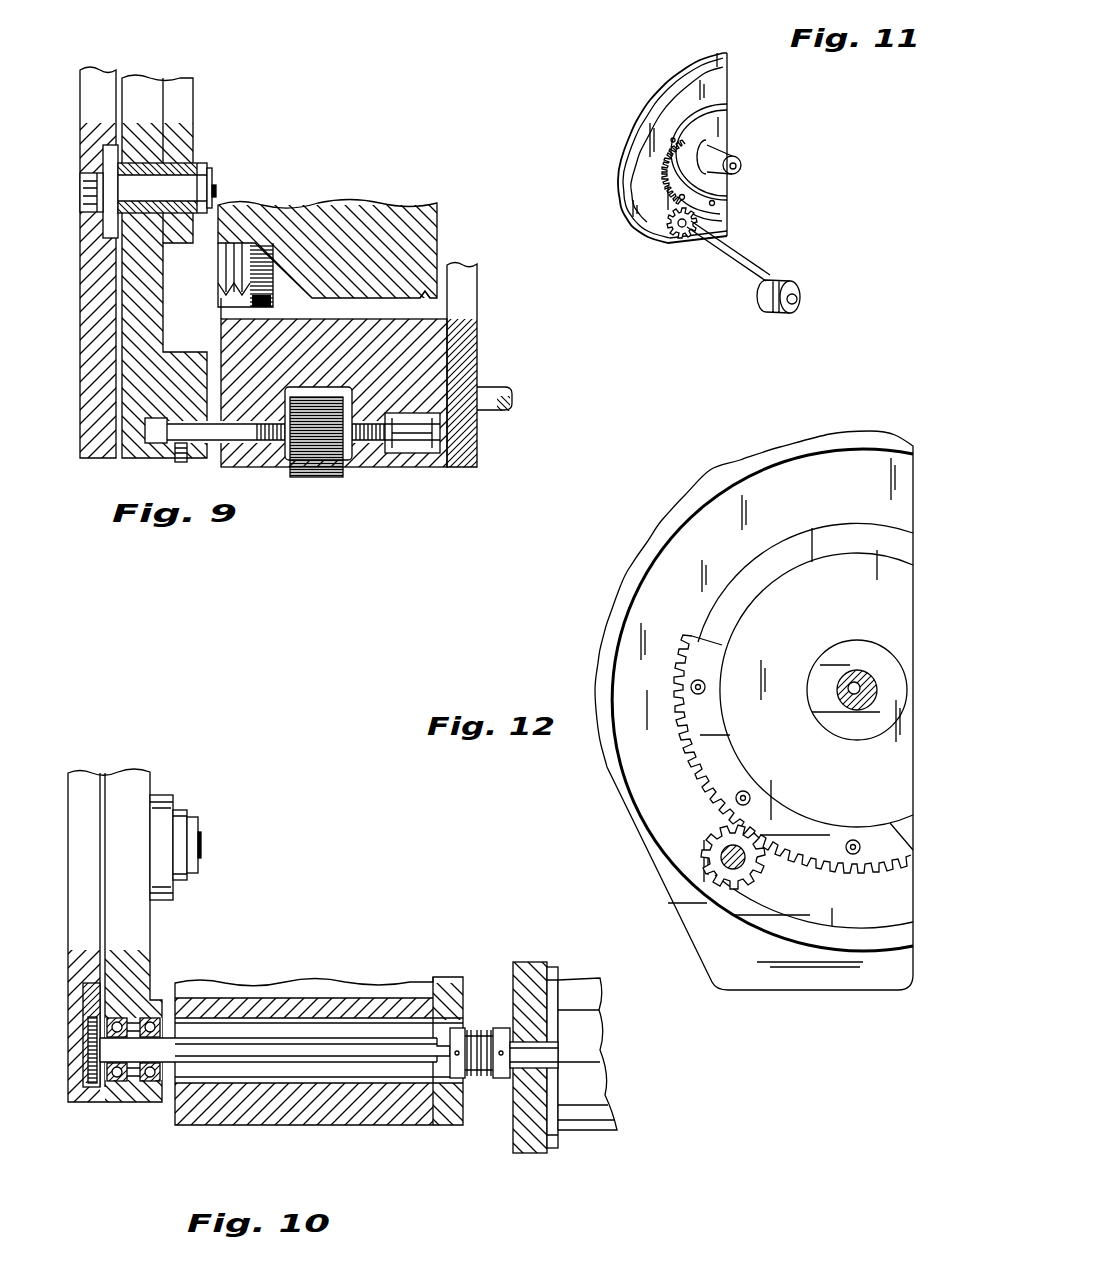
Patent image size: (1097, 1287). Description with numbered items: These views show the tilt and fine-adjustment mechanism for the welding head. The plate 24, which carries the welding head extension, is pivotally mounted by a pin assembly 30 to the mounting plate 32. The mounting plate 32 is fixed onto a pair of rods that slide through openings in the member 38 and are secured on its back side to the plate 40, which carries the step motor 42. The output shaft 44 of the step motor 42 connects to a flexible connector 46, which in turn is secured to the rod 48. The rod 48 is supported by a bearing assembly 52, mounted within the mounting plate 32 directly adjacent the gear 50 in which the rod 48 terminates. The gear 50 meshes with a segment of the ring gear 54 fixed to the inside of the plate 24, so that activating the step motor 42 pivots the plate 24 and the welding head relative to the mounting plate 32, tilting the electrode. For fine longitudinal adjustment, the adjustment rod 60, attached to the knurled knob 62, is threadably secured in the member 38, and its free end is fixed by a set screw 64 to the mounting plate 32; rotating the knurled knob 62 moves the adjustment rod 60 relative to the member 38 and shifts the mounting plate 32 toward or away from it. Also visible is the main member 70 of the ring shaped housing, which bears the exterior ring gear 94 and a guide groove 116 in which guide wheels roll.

In FIG. 9, the plate 24 is at (93, 381).
In FIG. 11, the plate 24 is at (665, 85).
In FIG. 12, the plate 24 is at (650, 580).
In FIG. 10, the plate 24 is at (88, 783).
In FIG. 9, the pin assembly 30 is at (167, 187).
In FIG. 11, the pin assembly 30 is at (737, 158).
In FIG. 12, the pin assembly 30 is at (860, 672).
In FIG. 10, the pin assembly 30 is at (198, 837).
In FIG. 9, the mounting plate 32 is at (130, 447).
In FIG. 10, the mounting plate 32 is at (143, 960).
In FIG. 9, the member 38 is at (430, 350).
In FIG. 10, the member 38 is at (337, 1112).
In FIG. 10, the plate 40 is at (523, 1147).
In FIG. 10, the step motor 42 is at (593, 1113).
In FIG. 10, the output shaft 44 is at (540, 1057).
In FIG. 11, the flexible connector 46 is at (773, 310).
In FIG. 10, the flexible connector 46 is at (482, 1028).
In FIG. 9, the rod 48 is at (493, 412).
In FIG. 11, the rod 48 is at (743, 258).
In FIG. 12, the rod 48 is at (760, 873).
In FIG. 10, the rod 48 is at (338, 1047).
In FIG. 11, the gear 50 is at (672, 240).
In FIG. 12, the gear 50 is at (745, 890).
In FIG. 10, the gear 50 is at (90, 1058).
In FIG. 10, the bearing assembly 52 is at (141, 1088).
In FIG. 11, the ring gear 54 is at (660, 175).
In FIG. 12, the ring gear 54 is at (690, 723).
In FIG. 10, the ring gear 54 is at (83, 993).
In FIG. 9, the adjustment rod 60 is at (247, 444).
In FIG. 9, the knurled knob 62 is at (322, 477).
In FIG. 9, the set screw 64 is at (182, 463).
In FIG. 9, the main member 70 is at (370, 213).
In FIG. 9, the ring gear 94 is at (273, 293).
In FIG. 9, the guide groove 116 is at (423, 294).